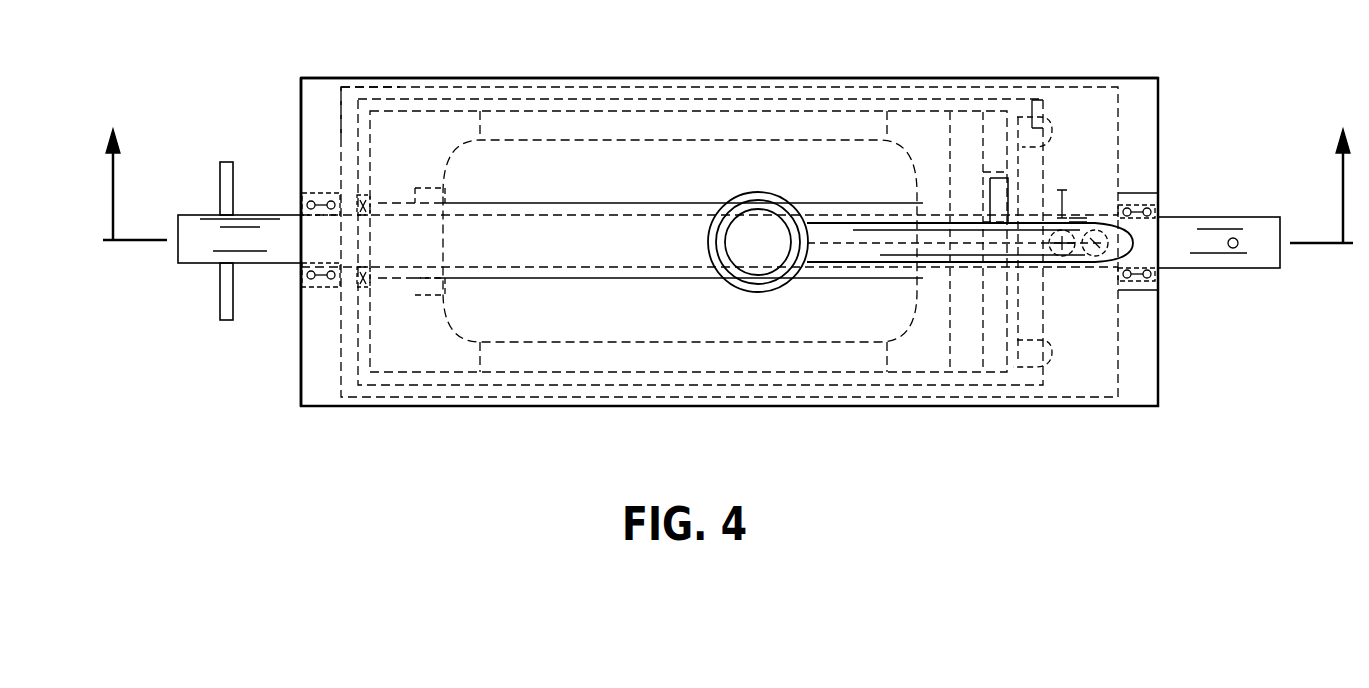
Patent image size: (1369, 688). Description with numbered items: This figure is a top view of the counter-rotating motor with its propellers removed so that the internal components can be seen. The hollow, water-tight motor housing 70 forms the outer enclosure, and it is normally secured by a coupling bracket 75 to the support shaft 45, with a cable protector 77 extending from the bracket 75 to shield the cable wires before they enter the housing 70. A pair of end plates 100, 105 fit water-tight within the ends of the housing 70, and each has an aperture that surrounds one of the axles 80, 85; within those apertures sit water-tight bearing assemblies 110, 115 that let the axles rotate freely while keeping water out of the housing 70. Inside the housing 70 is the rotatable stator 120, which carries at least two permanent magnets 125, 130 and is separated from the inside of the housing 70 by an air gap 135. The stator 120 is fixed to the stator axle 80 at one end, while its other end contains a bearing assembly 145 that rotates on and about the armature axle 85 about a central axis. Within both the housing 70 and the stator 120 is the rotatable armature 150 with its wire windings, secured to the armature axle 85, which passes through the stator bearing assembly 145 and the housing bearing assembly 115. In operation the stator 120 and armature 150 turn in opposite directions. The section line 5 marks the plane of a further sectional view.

The section line 5- 5 is at (728, 167).
The support shaft 45 is at (760, 200).
The motor housing 70 is at (843, 78).
The coupling bracket 75 is at (717, 213).
The cable protector 77 is at (968, 223).
The stator axle 80 is at (1190, 217).
The armature axle 85 is at (198, 265).
The end plate 100 is at (1148, 365).
The end plate 105 is at (313, 377).
The water-tight bearing assembly 110 is at (1148, 292).
The water-tight bearing assembly 115 is at (300, 323).
The rotatable stator 120 is at (520, 107).
The magnet 125 is at (537, 360).
The magnet 130 is at (787, 127).
The air gap 135 is at (350, 103).
The bearing assembly 145 is at (360, 195).
The rotatable armature 150 is at (712, 320).